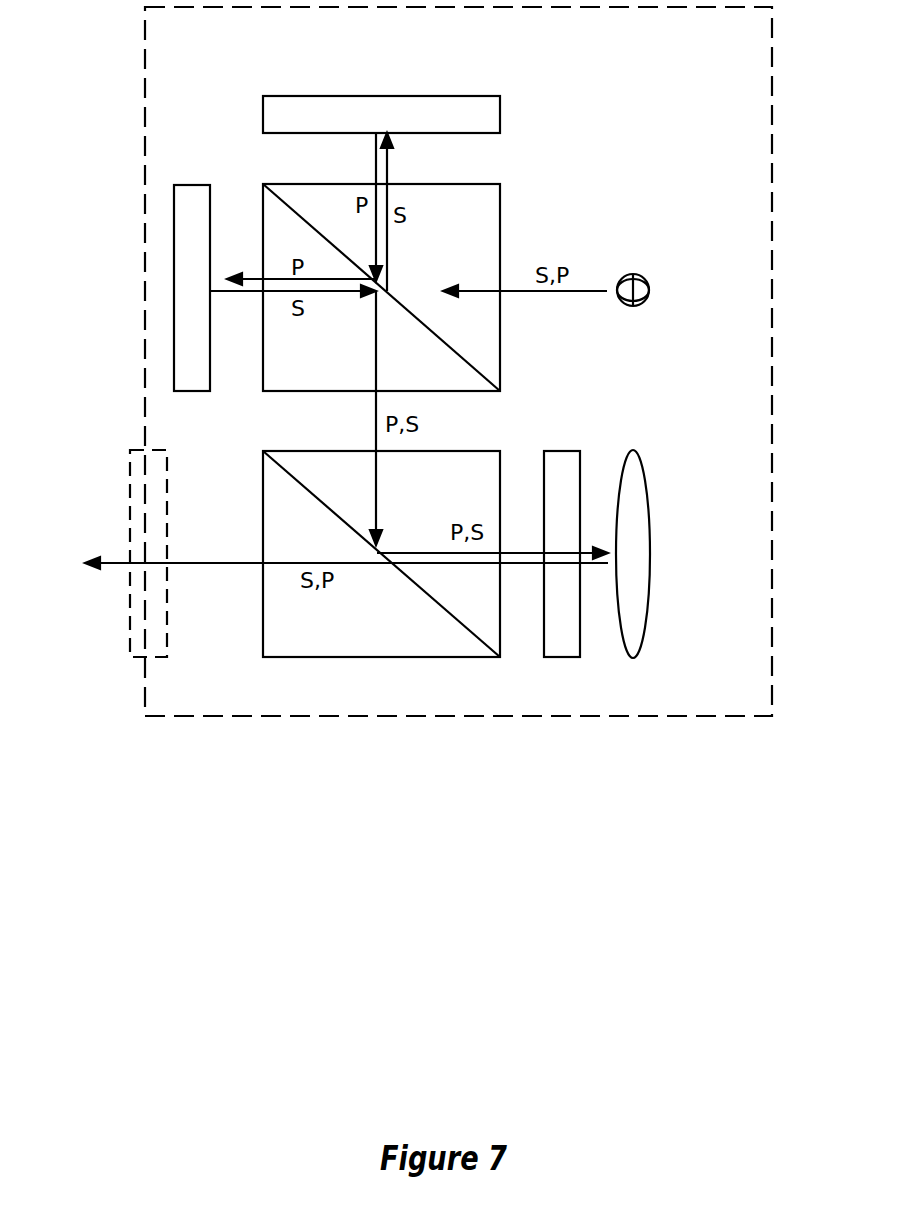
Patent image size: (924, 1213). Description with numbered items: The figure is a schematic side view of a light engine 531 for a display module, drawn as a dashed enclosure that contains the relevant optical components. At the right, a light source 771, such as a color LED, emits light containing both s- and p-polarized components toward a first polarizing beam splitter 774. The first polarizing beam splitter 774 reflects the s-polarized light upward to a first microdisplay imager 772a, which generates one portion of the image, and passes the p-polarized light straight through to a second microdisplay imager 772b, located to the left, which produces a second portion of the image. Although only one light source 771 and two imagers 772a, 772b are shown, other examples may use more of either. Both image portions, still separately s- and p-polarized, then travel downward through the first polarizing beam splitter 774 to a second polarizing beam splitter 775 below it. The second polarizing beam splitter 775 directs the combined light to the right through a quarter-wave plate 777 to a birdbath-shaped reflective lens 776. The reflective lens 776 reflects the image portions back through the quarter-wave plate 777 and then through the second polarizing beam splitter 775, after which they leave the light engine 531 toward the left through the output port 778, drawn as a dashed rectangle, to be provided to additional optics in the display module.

The light engine 531 is at (458, 361).
The light source 771 is at (645, 279).
The first microdisplay imager 772a is at (500, 118).
The second microdisplay imager 772b is at (174, 218).
The first polarizing beam splitter 774 is at (500, 212).
The second polarizing beam splitter 775 is at (500, 451).
The reflective lens 776 is at (649, 512).
The quarter-wave plate 777 is at (580, 451).
The output port 778 is at (130, 483).